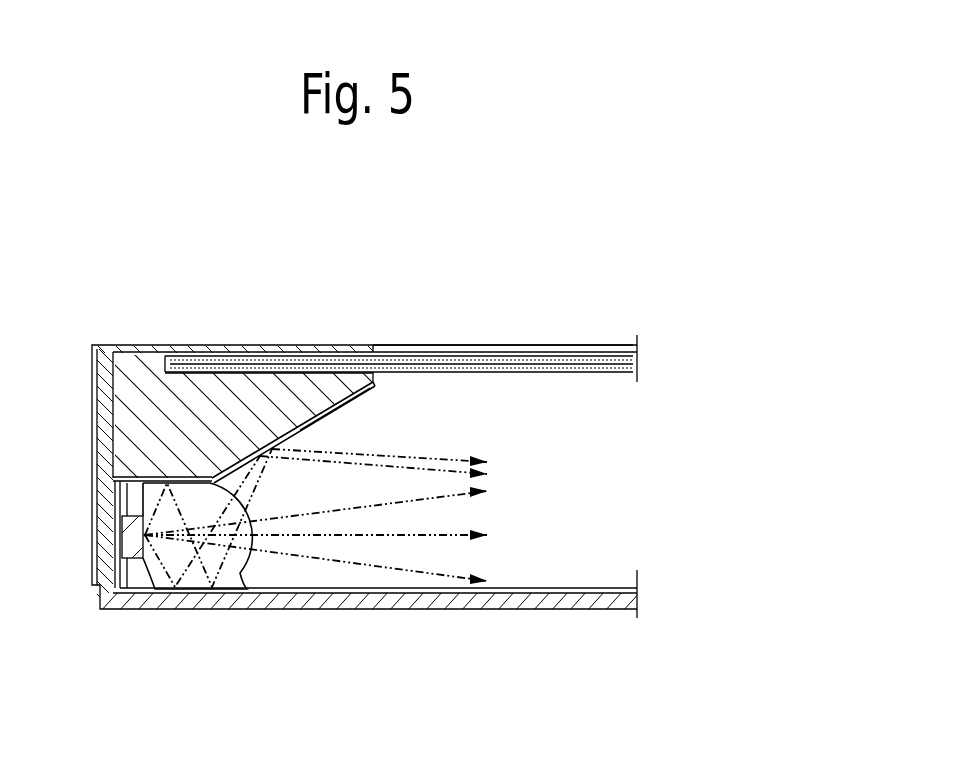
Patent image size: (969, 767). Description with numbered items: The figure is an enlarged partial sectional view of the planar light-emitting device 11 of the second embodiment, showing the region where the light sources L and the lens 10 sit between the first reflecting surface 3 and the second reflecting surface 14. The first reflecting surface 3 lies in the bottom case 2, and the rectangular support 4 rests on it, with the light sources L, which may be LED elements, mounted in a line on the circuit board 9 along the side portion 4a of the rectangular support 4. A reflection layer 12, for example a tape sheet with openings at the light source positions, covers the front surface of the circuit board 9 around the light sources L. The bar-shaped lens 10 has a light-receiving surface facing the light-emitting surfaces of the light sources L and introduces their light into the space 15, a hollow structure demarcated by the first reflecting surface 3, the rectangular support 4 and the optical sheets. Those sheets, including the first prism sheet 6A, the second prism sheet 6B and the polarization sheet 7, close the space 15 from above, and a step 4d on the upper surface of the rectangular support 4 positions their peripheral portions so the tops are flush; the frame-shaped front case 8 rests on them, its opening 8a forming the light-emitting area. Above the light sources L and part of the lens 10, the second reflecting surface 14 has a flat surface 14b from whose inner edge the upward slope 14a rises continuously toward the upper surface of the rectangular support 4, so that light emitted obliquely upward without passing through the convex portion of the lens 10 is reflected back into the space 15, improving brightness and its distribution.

The bottom case 2 is at (598, 610).
The first reflecting surface 3 is at (598, 588).
The rectangular support 4 is at (143, 345).
The side portion of the rectangular support 4a is at (307, 378).
The step 4d is at (182, 356).
The first prism sheet 6A is at (615, 372).
The second prism sheet 6B is at (607, 362).
The polarization sheet 7 is at (517, 356).
The front case 8 is at (238, 346).
The opening of the front case 8a is at (412, 345).
The circuit board 9 is at (120, 540).
The lens 10 is at (238, 568).
The planar light-emitting device 11 is at (600, 258).
The reflection layer 12 is at (137, 573).
The second reflecting surface 14 is at (362, 400).
The upward slope 14a is at (305, 427).
The flat surface 14b is at (130, 493).
The space 15 is at (516, 567).
The light sources L is at (140, 563).